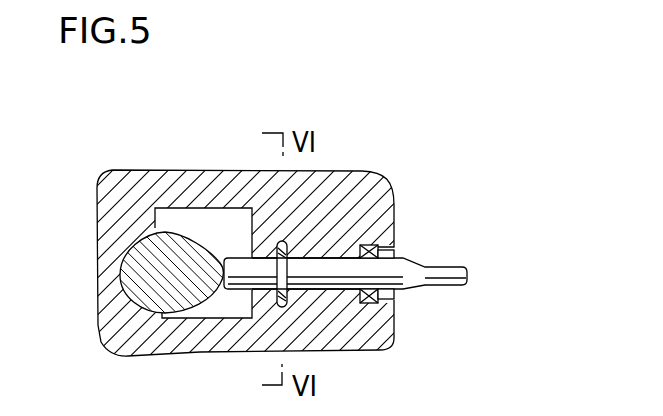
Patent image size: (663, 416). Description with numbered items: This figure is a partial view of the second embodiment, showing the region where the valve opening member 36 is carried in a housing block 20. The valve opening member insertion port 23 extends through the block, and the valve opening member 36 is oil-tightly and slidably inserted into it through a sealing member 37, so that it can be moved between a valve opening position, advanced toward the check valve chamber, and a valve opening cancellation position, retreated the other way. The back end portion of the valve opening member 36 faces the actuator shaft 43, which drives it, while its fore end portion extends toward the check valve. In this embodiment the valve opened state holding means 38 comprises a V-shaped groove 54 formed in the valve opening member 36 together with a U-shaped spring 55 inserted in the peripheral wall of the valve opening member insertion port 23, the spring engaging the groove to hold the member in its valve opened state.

The housing block 20 is at (215, 175).
The actuator shaft 43 is at (122, 257).
The valve opening member insertion port 23 is at (347, 280).
The valve opening member 36 is at (327, 290).
The sealing member 37 is at (395, 236).
The valve opened state holding means 38 is at (377, 208).
The V-shaped groove 54 is at (293, 230).
The U-shaped spring 55 is at (284, 244).